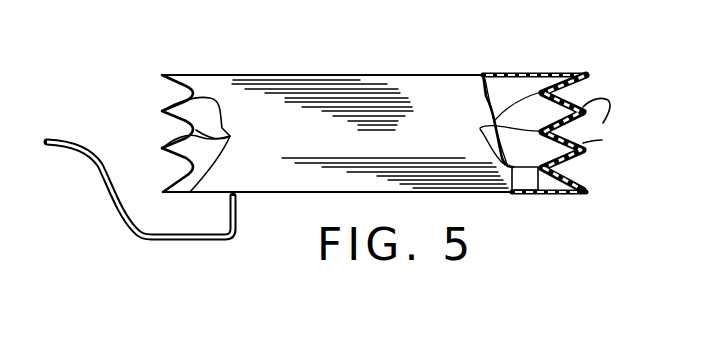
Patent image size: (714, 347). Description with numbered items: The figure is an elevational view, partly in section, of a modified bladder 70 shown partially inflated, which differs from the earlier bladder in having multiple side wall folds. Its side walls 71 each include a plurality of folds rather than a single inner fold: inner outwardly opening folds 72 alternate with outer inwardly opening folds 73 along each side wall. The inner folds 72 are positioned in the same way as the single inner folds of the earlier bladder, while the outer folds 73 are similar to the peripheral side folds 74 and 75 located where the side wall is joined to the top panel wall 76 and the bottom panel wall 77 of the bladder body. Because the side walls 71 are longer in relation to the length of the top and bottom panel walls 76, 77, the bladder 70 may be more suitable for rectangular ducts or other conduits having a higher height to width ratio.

The bladder 70 is at (401, 68).
The side walls 71 is at (158, 126).
The inner outwardly opening folds 72 is at (229, 134).
The outer inwardly opening folds 73 is at (162, 112).
The peripheral side fold 74 is at (162, 79).
The peripheral side fold 75 is at (165, 193).
The top panel wall 76 is at (278, 75).
The bottom panel wall 77 is at (307, 193).